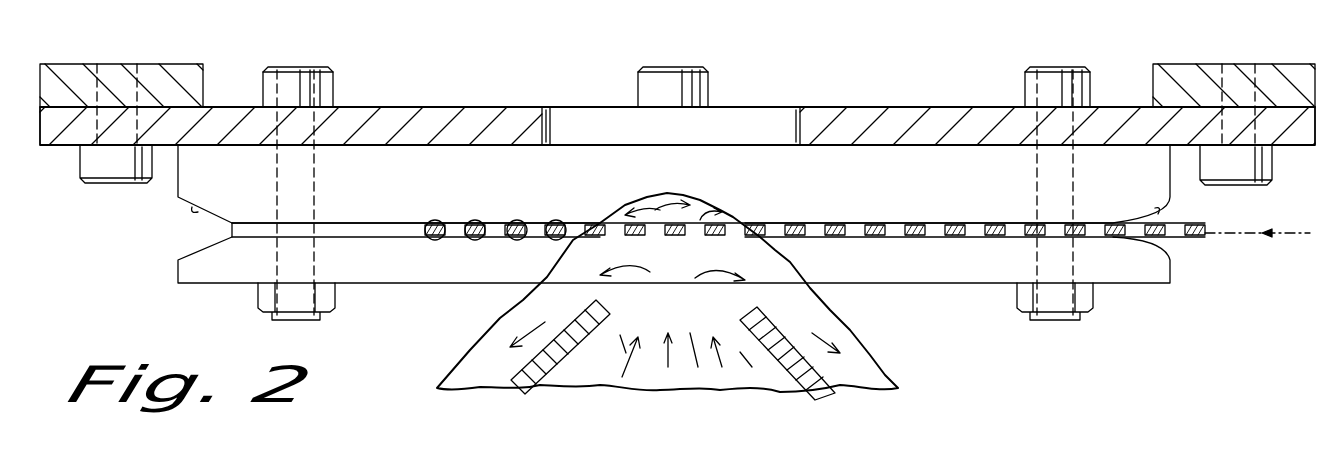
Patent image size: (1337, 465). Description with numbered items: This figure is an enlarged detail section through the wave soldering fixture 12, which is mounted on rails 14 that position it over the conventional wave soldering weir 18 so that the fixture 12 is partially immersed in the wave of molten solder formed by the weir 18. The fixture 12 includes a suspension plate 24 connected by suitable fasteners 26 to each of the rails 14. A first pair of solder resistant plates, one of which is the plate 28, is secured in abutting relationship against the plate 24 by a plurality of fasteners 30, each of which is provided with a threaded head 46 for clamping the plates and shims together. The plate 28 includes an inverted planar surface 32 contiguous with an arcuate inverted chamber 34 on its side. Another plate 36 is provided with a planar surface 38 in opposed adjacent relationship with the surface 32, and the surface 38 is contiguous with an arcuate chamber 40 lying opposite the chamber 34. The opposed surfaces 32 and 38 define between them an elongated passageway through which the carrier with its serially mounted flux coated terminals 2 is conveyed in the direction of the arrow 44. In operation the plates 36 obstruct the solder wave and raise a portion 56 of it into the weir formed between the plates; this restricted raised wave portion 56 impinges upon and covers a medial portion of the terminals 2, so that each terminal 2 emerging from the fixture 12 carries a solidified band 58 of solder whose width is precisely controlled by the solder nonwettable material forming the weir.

The terminals 2 is at (940, 224).
The fixture 12 is at (893, 97).
The rails 14 is at (175, 83).
The wave soldering weir 18 is at (768, 385).
The suspension plate 24 is at (462, 123).
The fasteners 26 is at (107, 165).
The solder resistant plate 28 is at (378, 177).
The fasteners 30 is at (318, 82).
The inverted planar surface 32 is at (412, 221).
The arcuate inverted chamber 34 is at (195, 212).
The plate 36 is at (385, 281).
The planar surface 38 is at (345, 233).
The arcuate chamber 40 is at (193, 253).
The arrow 44 is at (1290, 235).
The threaded head 46 is at (258, 306).
The raised wave portion 56 is at (728, 216).
The solidified band of solder 58 is at (477, 225).